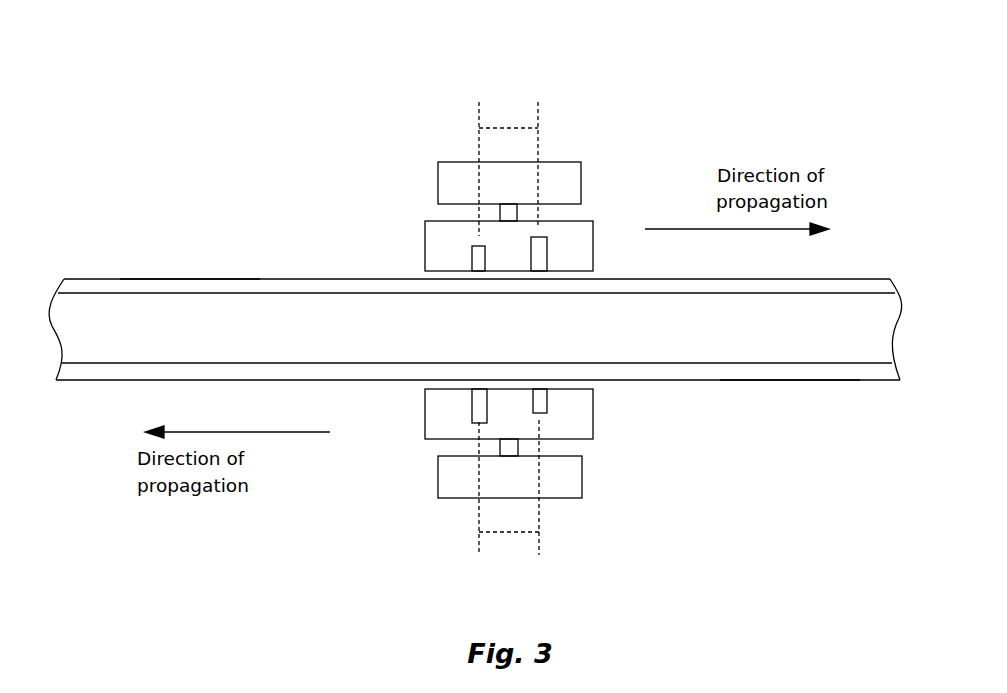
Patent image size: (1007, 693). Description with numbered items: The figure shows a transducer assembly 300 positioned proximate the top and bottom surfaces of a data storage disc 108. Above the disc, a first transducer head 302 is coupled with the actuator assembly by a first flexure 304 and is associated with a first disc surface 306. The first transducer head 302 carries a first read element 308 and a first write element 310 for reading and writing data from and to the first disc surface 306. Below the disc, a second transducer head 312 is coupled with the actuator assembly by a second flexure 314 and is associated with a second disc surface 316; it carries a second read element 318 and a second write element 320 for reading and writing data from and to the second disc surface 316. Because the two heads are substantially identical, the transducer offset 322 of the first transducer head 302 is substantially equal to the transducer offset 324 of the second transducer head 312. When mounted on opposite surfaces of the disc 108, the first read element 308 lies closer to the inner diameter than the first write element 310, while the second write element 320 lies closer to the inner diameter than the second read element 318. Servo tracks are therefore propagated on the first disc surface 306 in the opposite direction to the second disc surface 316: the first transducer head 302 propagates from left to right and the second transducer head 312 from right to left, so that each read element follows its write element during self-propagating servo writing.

The data storage disc 108 is at (495, 342).
The transducer assembly 300 is at (304, 126).
The first transducer head 302 is at (510, 169).
The first flexure 304 is at (438, 173).
The first disc surface 306 is at (191, 279).
The first read element 308 is at (472, 263).
The first write element 310 is at (547, 252).
The second transducer head 312 is at (509, 494).
The second flexure 314 is at (438, 494).
The second disc surface 316 is at (793, 382).
The second read element 318 is at (547, 410).
The second write element 320 is at (472, 406).
The transducer offset 322 is at (502, 128).
The transducer offset 324 is at (507, 533).